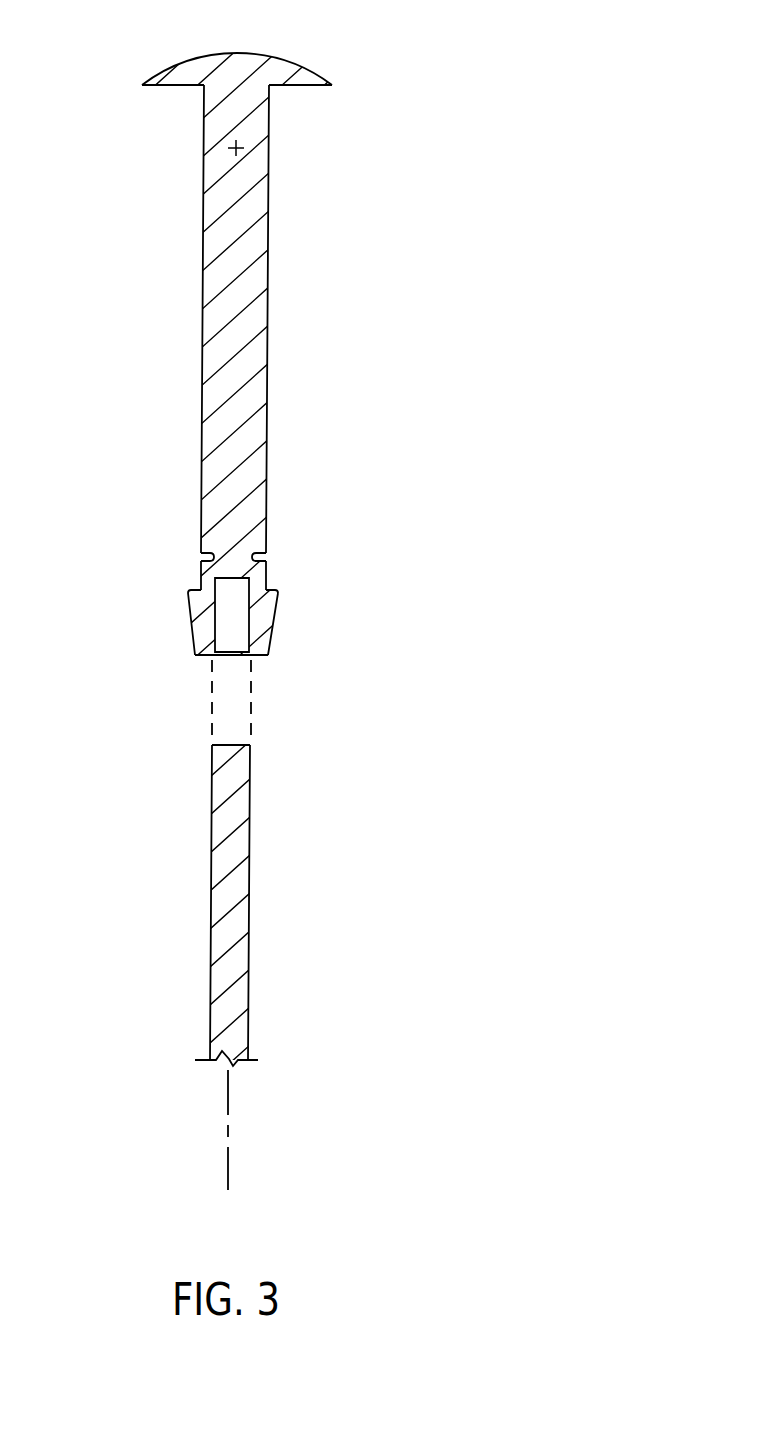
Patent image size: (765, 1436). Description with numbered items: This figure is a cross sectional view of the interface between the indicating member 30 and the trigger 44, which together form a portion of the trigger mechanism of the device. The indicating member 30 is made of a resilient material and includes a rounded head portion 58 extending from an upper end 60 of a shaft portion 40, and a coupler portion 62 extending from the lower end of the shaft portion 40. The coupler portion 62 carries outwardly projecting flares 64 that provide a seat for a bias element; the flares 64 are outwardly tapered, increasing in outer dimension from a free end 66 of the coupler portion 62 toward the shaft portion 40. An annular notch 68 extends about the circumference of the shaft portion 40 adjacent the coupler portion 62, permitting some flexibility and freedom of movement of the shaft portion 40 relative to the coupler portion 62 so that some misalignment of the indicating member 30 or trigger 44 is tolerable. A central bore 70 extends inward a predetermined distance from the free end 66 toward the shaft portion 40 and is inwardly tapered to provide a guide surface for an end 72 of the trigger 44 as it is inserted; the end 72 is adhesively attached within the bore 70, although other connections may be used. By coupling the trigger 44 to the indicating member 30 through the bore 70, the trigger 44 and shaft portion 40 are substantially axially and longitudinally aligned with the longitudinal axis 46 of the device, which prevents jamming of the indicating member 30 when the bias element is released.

The indicating member 30 is at (277, 284).
The rounded head portion 58 is at (254, 52).
The upper end of shaft portion 60 is at (270, 94).
The shaft portion 40 is at (213, 326).
The annular notch 68 is at (213, 554).
The coupler portion 62 is at (293, 560).
The flares 64 is at (268, 598).
The free end of coupler portion 66 is at (207, 657).
The central bore 70 is at (234, 638).
The end of trigger 72 is at (250, 755).
The trigger 44 is at (250, 826).
The longitudinal axis 46 is at (228, 1098).